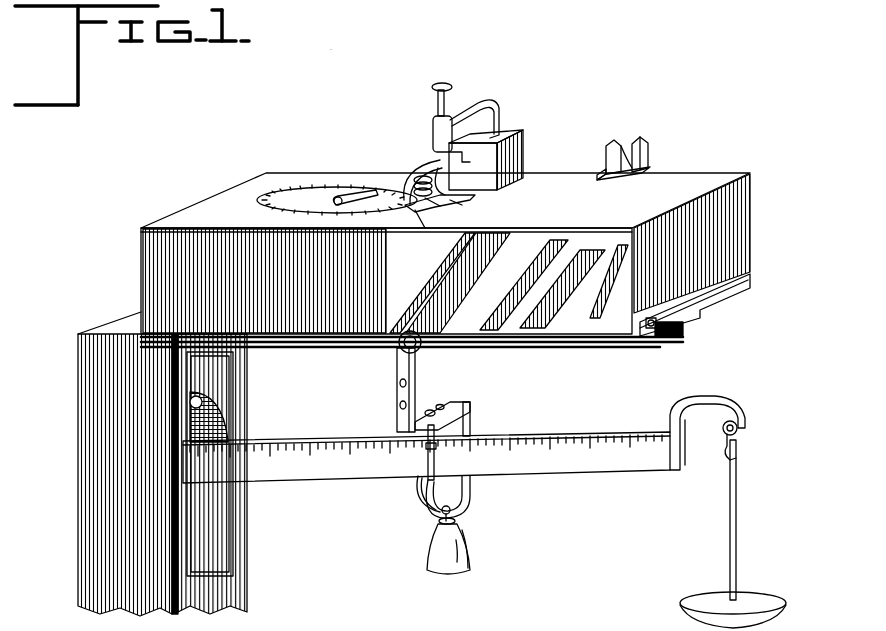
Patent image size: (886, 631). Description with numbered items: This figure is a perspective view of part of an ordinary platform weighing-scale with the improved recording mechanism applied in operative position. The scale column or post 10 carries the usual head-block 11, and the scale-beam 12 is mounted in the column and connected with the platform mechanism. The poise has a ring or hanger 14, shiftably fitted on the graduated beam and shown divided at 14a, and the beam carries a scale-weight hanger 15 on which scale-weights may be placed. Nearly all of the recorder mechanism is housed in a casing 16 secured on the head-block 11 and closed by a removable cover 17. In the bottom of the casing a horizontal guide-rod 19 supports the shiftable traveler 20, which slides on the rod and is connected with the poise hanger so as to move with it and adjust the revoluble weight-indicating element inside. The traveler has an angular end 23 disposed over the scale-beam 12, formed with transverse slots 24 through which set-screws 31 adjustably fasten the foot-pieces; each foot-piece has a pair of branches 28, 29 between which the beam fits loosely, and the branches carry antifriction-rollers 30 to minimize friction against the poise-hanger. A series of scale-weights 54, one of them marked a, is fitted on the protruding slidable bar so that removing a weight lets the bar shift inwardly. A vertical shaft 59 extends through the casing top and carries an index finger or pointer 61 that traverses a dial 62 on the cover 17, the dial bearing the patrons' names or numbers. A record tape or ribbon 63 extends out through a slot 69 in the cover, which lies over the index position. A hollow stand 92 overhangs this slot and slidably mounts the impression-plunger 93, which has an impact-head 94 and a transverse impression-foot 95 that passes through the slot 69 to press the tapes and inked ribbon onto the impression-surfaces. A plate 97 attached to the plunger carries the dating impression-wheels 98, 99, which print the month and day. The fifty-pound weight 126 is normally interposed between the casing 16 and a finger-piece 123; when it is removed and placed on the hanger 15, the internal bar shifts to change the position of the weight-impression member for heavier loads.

The scale column or post 10 is at (82, 466).
The head-block 11 is at (712, 304).
The scale-beam 12 is at (597, 465).
The poise hanger or ring 14 is at (468, 485).
The division of the poise ring 14a is at (426, 498).
The scale-weight hanger 15 is at (470, 555).
The casing 16 is at (148, 278).
The cover 17 is at (705, 173).
The guide-rod 19 is at (653, 330).
The traveler 20 is at (397, 396).
The angular end 23 is at (458, 403).
The transverse slots 24 is at (430, 409).
The branch 28 is at (422, 482).
The branch 29 is at (472, 418).
The antifriction-rollers 30 is at (424, 472).
The set-screws 31 is at (441, 404).
The scale-weights 54 is at (420, 170).
The scale-weight a is at (432, 160).
The vertical shaft 59 is at (342, 195).
The index finger or pointer 61 is at (362, 191).
The dial 62 is at (268, 188).
The record tape or ribbon 63 is at (425, 228).
The slot 69 is at (456, 201).
The hollow stand 92 is at (497, 112).
The impression-plunger 93 is at (446, 106).
The impact-head 94 is at (440, 84).
The impression-foot 95 is at (458, 196).
The plate 97 is at (458, 158).
The dating impression-wheel 98 is at (436, 202).
The dating impression-wheel 99 is at (416, 183).
The finger-piece 123 is at (647, 145).
The weight 126 is at (608, 162).